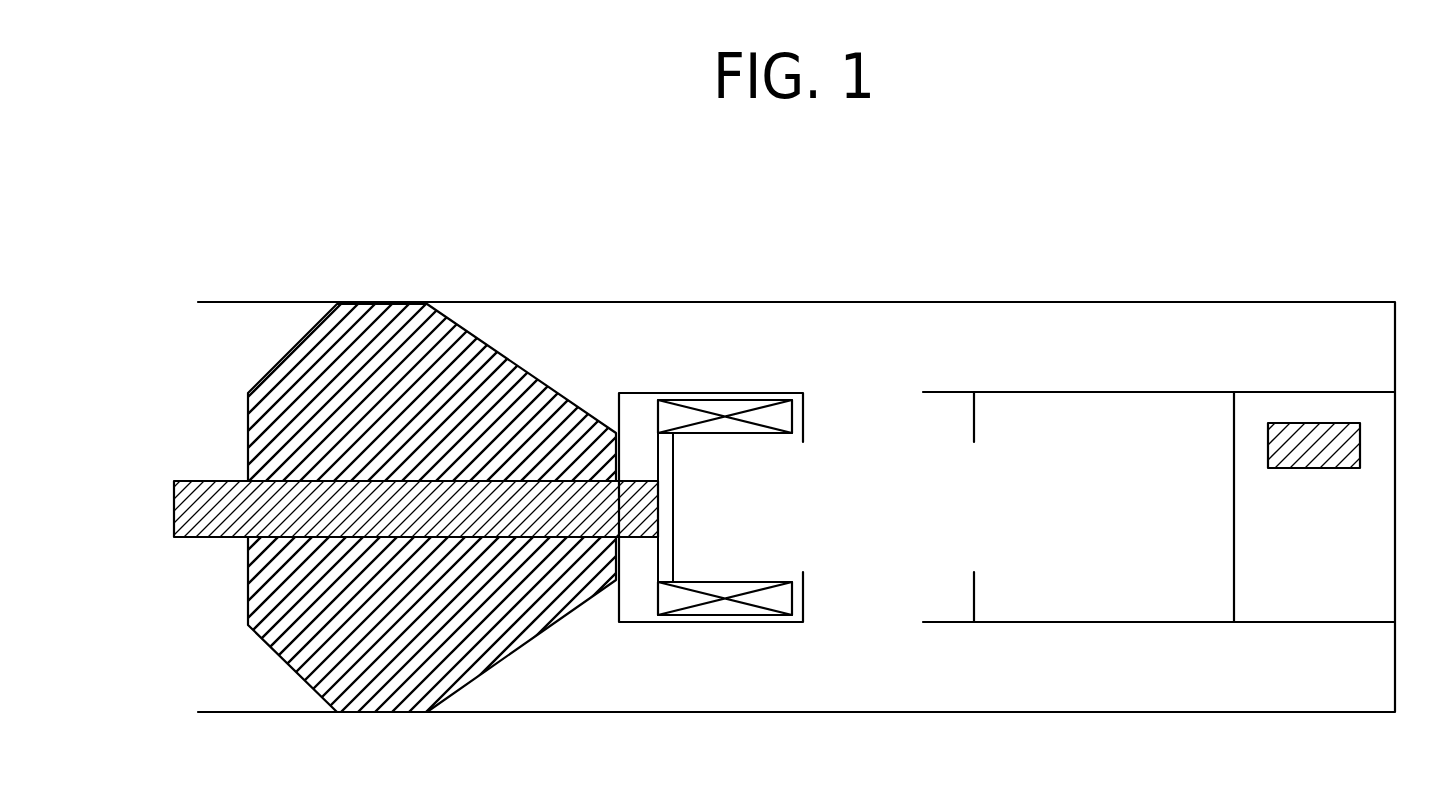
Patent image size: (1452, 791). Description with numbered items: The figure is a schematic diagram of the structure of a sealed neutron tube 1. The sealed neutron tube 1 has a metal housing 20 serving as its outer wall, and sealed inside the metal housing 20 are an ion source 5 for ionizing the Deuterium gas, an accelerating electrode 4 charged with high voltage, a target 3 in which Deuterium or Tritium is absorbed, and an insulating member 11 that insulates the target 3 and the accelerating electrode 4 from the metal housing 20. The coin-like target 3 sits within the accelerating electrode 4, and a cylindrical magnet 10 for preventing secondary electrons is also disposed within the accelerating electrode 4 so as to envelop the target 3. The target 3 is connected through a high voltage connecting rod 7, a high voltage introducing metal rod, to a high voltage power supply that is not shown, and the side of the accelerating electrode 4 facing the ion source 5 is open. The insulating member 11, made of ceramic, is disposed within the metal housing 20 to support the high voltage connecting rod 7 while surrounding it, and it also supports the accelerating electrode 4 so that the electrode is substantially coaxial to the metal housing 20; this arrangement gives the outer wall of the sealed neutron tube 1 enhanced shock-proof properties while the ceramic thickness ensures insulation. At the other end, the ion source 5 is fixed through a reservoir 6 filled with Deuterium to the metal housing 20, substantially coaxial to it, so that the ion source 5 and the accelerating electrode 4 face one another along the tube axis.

The sealed neutron tube 1 is at (892, 243).
The target 3 is at (680, 553).
The accelerating electrode 4 is at (727, 393).
The ion source 5 is at (1153, 392).
The reservoir 6 is at (1360, 442).
The high voltage connecting rod 7 is at (207, 495).
The cylindrical magnet 10 is at (781, 602).
The insulating member 11 is at (399, 315).
The metal housing 20 is at (1025, 302).